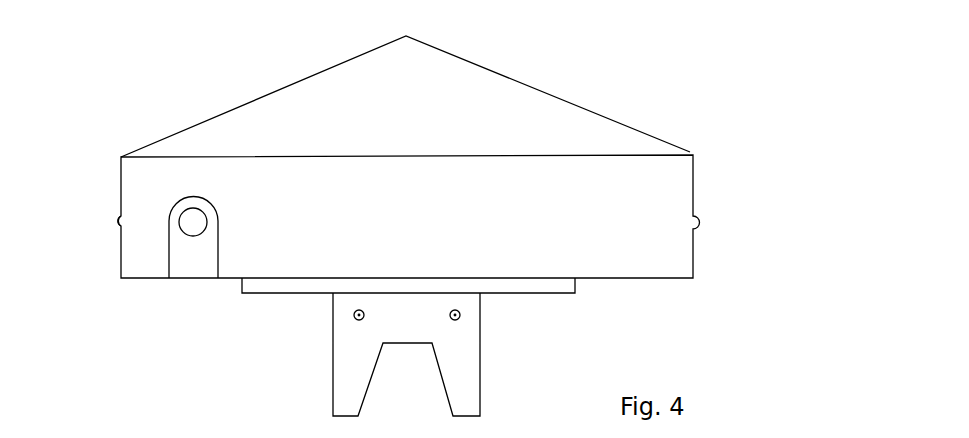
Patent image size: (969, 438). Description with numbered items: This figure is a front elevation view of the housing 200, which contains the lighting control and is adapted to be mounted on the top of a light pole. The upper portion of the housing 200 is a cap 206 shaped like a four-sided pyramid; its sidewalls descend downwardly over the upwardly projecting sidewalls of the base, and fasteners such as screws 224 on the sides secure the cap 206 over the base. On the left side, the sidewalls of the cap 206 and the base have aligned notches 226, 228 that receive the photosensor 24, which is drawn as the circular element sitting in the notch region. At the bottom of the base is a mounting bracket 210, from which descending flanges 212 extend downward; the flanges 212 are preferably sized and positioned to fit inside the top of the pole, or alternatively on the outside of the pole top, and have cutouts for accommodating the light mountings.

The housing 200 is at (708, 119).
The cap 206 is at (553, 106).
The mounting bracket 210 is at (534, 287).
The descending flanges 212 is at (439, 336).
The screws 224 is at (116, 220).
The notch 226 is at (177, 208).
The notch 228 is at (193, 230).
The photosensor 24 is at (193, 217).